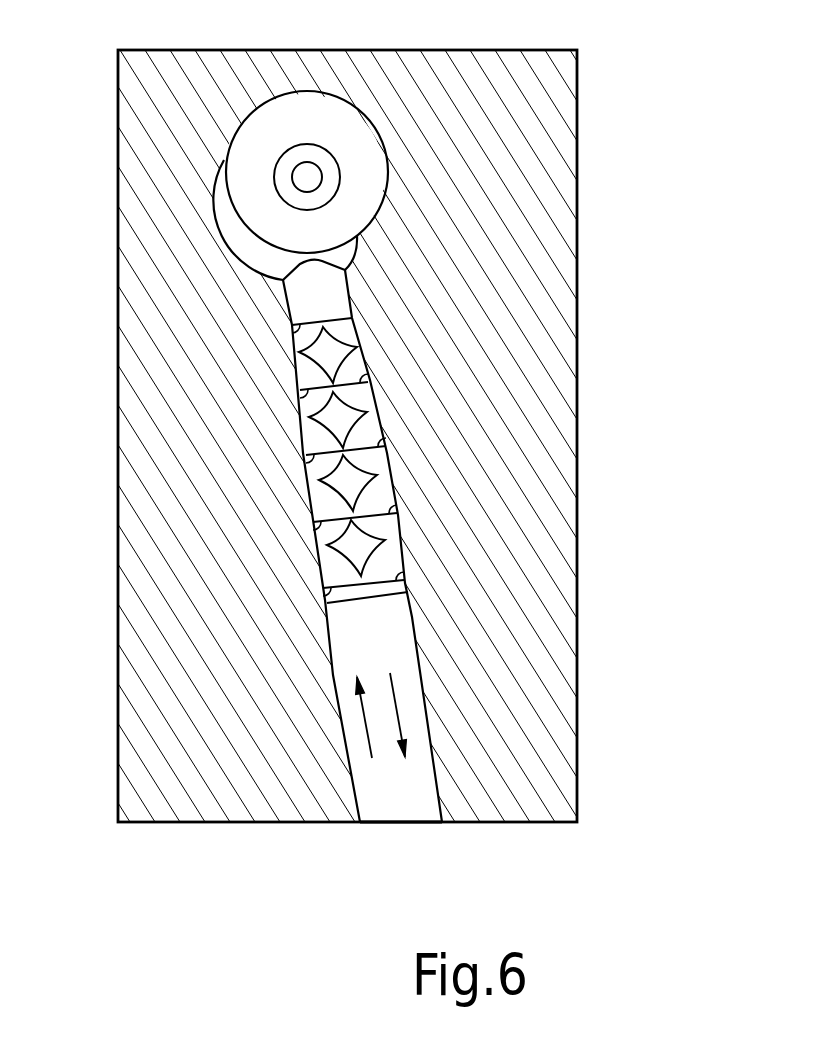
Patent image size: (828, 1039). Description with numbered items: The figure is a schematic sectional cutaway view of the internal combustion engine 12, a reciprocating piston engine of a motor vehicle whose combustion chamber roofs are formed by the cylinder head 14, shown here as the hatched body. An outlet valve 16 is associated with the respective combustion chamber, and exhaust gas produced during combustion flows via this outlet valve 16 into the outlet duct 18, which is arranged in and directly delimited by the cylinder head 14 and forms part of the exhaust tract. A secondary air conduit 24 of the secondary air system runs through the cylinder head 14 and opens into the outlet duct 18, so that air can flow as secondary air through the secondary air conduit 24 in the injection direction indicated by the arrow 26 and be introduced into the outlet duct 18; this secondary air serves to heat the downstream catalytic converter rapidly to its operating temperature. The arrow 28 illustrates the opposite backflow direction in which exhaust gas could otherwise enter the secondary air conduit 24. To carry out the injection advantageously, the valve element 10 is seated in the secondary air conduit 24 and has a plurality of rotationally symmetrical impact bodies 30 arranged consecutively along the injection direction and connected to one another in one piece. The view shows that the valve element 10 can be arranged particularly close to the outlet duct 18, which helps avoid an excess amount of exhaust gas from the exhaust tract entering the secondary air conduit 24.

The valve element 10 is at (308, 477).
The internal combustion engine 12 is at (578, 80).
The cylinder head 14 is at (540, 162).
The outlet valve 16 is at (368, 140).
The outlet duct 18 is at (243, 258).
The secondary air conduit 24 is at (395, 795).
The arrow indicating injection direction 26 is at (357, 710).
The arrow indicating backflow direction 28 is at (393, 698).
The impact body 30 is at (333, 365).